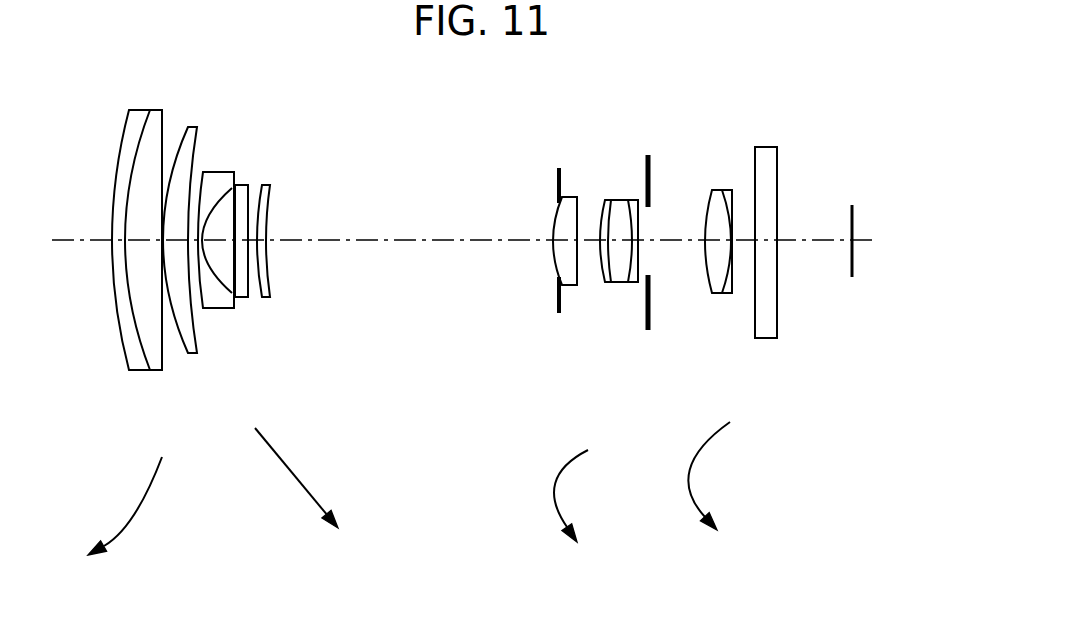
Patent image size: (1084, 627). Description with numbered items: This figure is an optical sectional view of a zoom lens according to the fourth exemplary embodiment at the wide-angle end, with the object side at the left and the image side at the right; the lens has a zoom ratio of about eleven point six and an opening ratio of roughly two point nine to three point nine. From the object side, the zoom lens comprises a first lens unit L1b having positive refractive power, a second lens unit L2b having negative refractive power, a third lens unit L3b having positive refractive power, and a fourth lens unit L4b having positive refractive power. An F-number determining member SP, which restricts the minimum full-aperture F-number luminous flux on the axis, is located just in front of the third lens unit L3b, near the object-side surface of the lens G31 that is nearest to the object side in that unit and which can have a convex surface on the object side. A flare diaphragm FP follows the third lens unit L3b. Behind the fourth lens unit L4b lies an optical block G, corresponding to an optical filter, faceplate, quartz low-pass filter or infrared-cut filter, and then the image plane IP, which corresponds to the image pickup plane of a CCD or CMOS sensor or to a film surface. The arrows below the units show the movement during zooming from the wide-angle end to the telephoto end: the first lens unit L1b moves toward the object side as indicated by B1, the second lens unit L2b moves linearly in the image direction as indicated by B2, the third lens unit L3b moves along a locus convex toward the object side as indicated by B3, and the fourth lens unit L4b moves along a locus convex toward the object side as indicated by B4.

The first lens unit L1b is at (201, 400).
The second lens unit L2b is at (281, 362).
The third lens unit L3b is at (605, 300).
The fourth lens unit L4b is at (790, 363).
The F-number determining member SP is at (557, 182).
The lens G31 is at (568, 198).
The flare diaphragm FP is at (645, 168).
The optical block G is at (762, 152).
The image plane IP is at (855, 213).
The movement locus of first lens unit B1 is at (133, 506).
The movement locus of second lens unit B2 is at (296, 478).
The movement locus of third lens unit B3 is at (557, 496).
The movement locus of fourth lens unit B4 is at (695, 476).